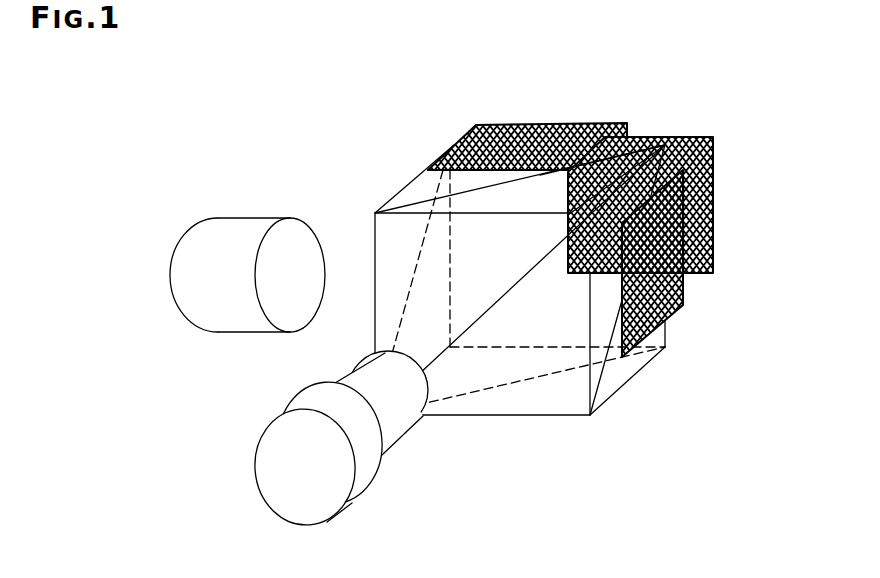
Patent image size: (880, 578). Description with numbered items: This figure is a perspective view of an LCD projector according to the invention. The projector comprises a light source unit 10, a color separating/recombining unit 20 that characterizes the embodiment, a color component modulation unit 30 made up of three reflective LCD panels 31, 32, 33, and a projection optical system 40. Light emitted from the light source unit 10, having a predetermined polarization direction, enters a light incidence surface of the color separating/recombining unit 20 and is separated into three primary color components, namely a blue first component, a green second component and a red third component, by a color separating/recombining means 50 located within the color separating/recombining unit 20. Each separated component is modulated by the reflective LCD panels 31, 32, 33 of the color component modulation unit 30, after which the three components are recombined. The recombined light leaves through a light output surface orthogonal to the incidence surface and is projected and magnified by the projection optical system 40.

The light source unit 10 is at (250, 233).
The color separating/recombining unit 20 is at (565, 417).
The color component modulation unit 30 is at (604, 209).
The reflective LCD panel 31 is at (701, 238).
The reflective LCD panel 32 is at (688, 137).
The reflective LCD panel 33 is at (548, 121).
The projection optical system 40 is at (273, 477).
The color separating/recombining means 50 is at (562, 390).